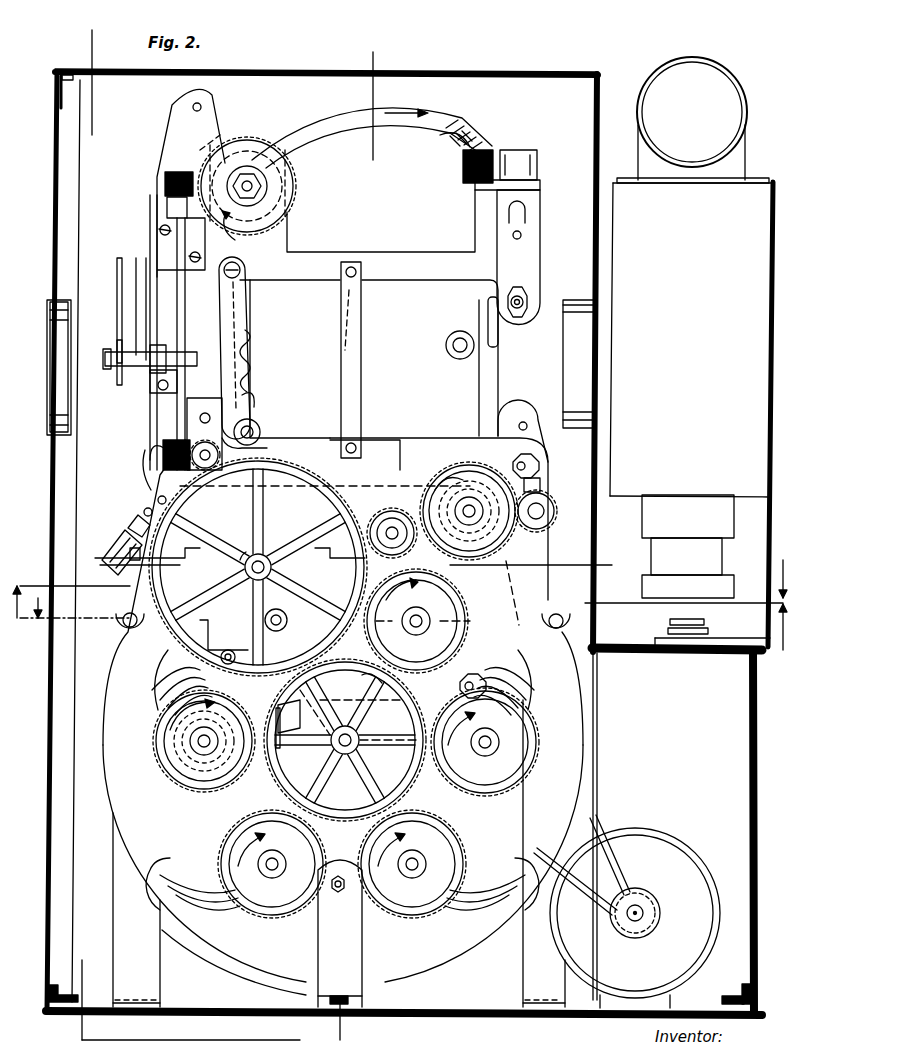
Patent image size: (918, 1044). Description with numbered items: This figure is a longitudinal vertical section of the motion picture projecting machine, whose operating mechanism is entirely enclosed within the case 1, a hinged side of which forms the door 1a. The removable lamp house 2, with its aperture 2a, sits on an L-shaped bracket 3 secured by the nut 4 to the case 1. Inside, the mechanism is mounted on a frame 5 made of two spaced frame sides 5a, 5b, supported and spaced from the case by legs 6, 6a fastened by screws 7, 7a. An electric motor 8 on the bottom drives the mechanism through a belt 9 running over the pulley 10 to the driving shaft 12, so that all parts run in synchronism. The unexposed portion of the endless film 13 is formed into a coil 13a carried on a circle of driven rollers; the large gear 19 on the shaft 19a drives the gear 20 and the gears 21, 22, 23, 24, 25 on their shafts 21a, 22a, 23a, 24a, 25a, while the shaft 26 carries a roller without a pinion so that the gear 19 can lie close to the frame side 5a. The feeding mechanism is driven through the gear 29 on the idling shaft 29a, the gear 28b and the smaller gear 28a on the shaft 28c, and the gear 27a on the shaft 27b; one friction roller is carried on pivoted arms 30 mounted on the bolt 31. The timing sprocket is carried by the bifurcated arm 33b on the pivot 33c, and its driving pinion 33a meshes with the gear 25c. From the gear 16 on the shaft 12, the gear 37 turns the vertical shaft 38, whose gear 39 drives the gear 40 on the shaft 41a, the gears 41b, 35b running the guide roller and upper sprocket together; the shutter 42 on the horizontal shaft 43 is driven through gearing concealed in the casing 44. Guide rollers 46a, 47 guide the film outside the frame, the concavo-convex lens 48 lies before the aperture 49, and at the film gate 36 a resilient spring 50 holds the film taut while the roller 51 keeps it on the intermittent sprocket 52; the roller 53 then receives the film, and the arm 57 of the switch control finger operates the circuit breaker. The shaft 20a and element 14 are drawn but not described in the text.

The case 1 is at (70, 851).
The door 1a is at (560, 78).
The removable lamp house 2 is at (692, 154).
The aperture for the removable lamp house 2a is at (580, 300).
The L-shaped bracket 3 is at (92, 48).
The nut 4 is at (373, 52).
The frame 5 is at (650, 710).
The frame side 5a is at (425, 268).
The frame side 5b is at (580, 686).
The leg 6 is at (320, 990).
The leg 6a is at (150, 975).
The screw 7 is at (365, 996).
The screw 7a is at (140, 998).
The electric motor 8 is at (680, 862).
The belt 9 is at (612, 820).
The pulley 10 is at (636, 928).
The driving shaft 12 is at (207, 460).
The endless film 13 is at (418, 110).
The coil 13a is at (498, 380).
The circular plate 14 is at (150, 685).
The gear 16 is at (262, 445).
The large gear 19 is at (262, 520).
The shaft 19a is at (262, 560).
The gear 20 is at (416, 778).
The gear shaft 20a is at (352, 736).
The gear 21 is at (417, 621).
The shaft 21a is at (416, 615).
The gear 22 is at (485, 742).
The shaft 22a is at (486, 734).
The gear 23 is at (412, 864).
The shaft 23a is at (414, 856).
The gear 24 is at (272, 864).
The shaft 24a is at (282, 845).
The gear 25 is at (204, 741).
The shaft 25a is at (198, 745).
The gear 25c is at (178, 735).
The shaft 26 is at (278, 628).
The gear 27a is at (545, 485).
The shaft 27b is at (548, 500).
The smaller gear 28a is at (470, 525).
The gear 28b is at (447, 470).
The shaft 28c is at (433, 493).
The gear 29 is at (387, 482).
The idling shaft 29a is at (392, 533).
The pivoted arms 30 is at (525, 455).
The bolt 31 is at (510, 465).
The driving pinion 33a is at (224, 642).
The arm 33b is at (300, 720).
The pivot 33c is at (457, 685).
The gear 35b is at (192, 160).
The film gate 36 is at (238, 303).
The gear 37 is at (165, 465).
The vertical shaft 38 is at (176, 425).
The gear 39 is at (165, 190).
The gear 40 is at (270, 196).
The shaft 41a is at (262, 185).
The gear 41b is at (265, 205).
The shutter 42 is at (117, 270).
The horizontal shaft 43 is at (136, 344).
The casing 44 is at (170, 366).
The guide roller 46a is at (462, 340).
The guide roller 47 is at (438, 140).
The concavo-convex lens 48 is at (362, 315).
The aperture 49 is at (55, 357).
The resilient spring 50 is at (252, 342).
The roller 51 is at (258, 418).
The intermittent sprocket 52 is at (255, 398).
The roller 53 is at (160, 460).
The arm 57 is at (118, 540).